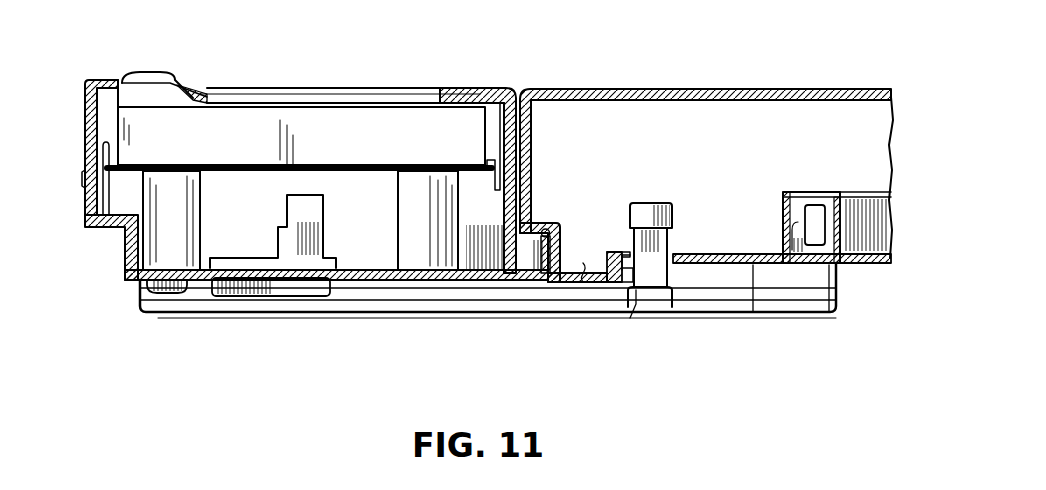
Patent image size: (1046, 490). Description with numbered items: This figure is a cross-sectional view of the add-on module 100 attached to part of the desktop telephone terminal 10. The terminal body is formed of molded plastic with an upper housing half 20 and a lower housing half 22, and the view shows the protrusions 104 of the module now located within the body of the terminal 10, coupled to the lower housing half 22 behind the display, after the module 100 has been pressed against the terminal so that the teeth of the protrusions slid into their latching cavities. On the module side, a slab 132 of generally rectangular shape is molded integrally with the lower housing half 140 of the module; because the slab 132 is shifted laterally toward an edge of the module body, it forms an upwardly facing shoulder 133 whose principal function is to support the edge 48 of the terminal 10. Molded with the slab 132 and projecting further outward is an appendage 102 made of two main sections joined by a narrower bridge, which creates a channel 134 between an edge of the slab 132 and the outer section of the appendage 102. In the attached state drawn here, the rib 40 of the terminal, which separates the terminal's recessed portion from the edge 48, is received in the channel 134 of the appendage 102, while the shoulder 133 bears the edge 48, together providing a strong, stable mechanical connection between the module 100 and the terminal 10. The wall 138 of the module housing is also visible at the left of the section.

The desktop telephone terminal 10 is at (777, 71).
The upper housing half 20 is at (613, 89).
The lower housing half 22 is at (868, 263).
The rib 40 is at (585, 283).
The edge 48 is at (528, 236).
The add-on module 100 is at (360, 76).
The appendage 102 is at (556, 283).
The protrusions 104 is at (650, 260).
The slab 132 is at (363, 280).
The shoulder 133 is at (530, 243).
The channel 134 is at (552, 277).
The side wall 138 is at (86, 118).
The lower housing half 140 is at (85, 200).